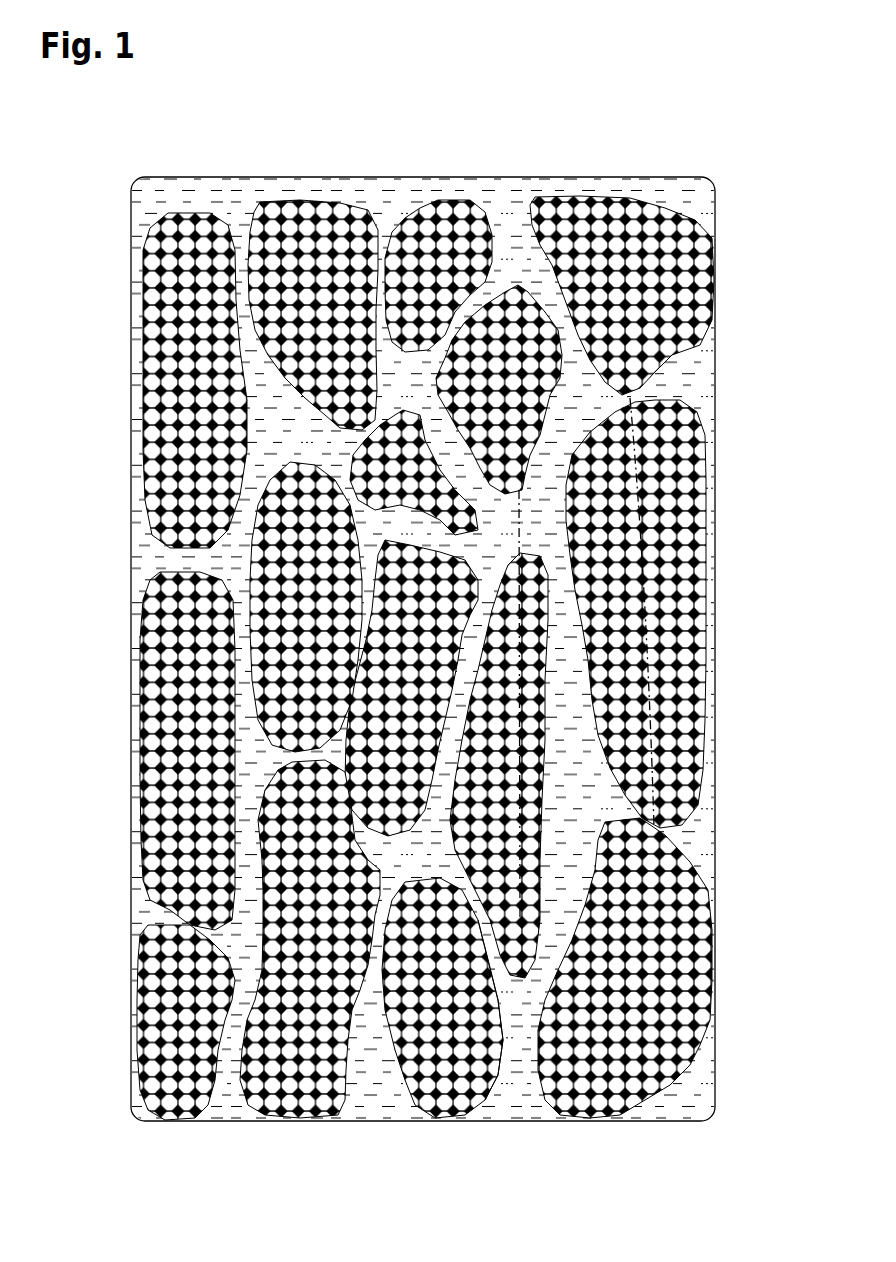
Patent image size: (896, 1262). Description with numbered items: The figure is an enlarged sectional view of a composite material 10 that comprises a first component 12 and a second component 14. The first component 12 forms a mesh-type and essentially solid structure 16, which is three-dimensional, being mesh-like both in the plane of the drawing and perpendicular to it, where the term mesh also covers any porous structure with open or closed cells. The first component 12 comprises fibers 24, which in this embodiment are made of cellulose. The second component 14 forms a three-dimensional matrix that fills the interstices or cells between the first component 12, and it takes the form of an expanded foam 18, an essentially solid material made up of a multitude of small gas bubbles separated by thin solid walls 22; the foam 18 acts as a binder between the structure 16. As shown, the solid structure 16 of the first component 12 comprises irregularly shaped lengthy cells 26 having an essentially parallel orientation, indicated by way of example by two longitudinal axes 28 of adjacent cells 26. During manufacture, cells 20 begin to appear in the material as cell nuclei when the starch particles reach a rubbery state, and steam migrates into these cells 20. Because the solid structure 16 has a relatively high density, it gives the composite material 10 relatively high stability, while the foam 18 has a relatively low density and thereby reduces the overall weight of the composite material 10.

The composite material 10 is at (724, 190).
The first component 12 is at (717, 350).
The second component 14 is at (708, 435).
The solid structure 16 is at (577, 587).
The foam 18 is at (583, 1063).
The cells 20 is at (445, 1068).
The walls 22 is at (472, 1086).
The fibers 24 is at (200, 570).
The cells 26 is at (297, 620).
The longitudinal axes 28 is at (522, 532).